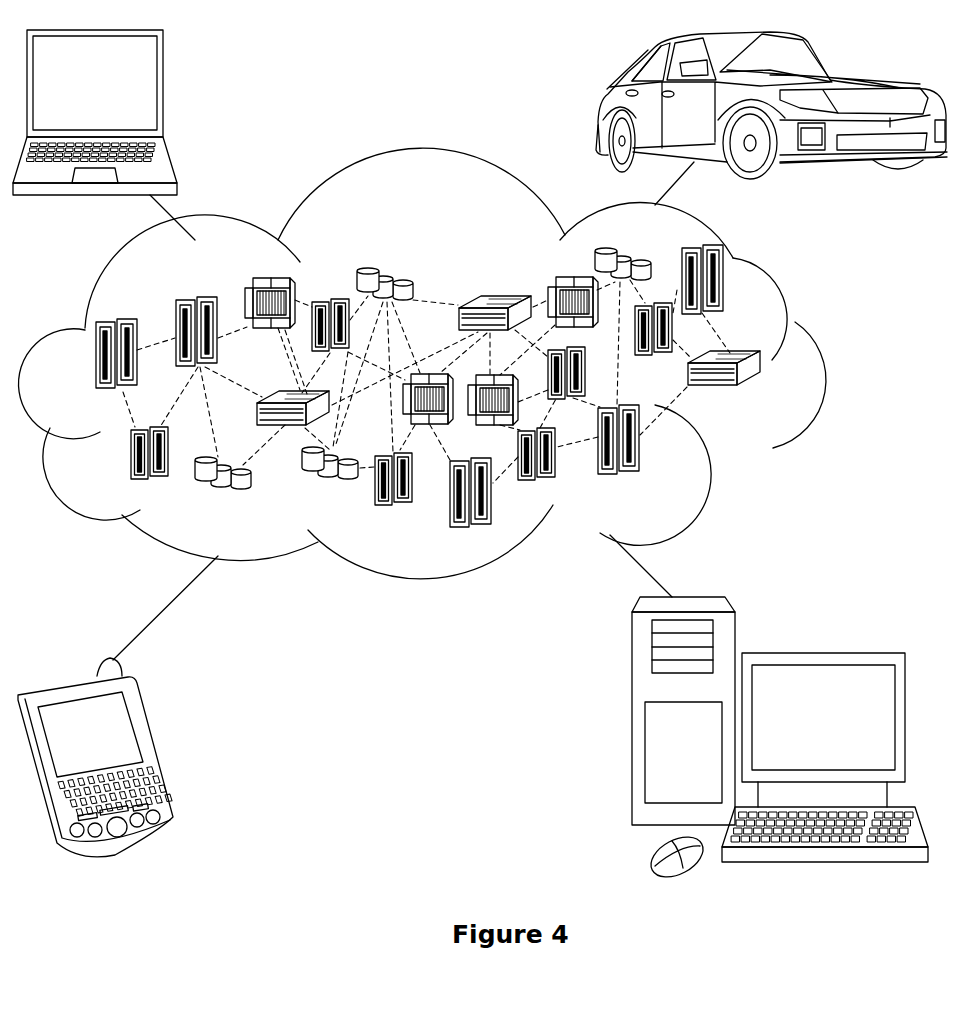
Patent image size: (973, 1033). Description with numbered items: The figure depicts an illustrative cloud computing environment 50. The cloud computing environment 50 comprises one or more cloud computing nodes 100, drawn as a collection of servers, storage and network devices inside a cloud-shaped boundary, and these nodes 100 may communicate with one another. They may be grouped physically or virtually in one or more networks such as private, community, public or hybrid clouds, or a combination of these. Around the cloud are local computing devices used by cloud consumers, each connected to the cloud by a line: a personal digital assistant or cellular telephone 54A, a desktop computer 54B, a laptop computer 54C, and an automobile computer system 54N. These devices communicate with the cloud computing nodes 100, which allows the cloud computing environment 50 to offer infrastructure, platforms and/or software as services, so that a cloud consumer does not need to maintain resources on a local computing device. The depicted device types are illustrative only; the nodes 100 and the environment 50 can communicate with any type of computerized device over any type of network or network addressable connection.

The laptop computer 54C is at (163, 92).
The automobile computer system 54N is at (602, 108).
The personal digital assistant (PDA) or cellular telephone 54A is at (150, 744).
The desktop computer 54B is at (820, 653).
The cloud computing environment 50 is at (820, 363).
The cloud computing nodes 100 is at (768, 397).